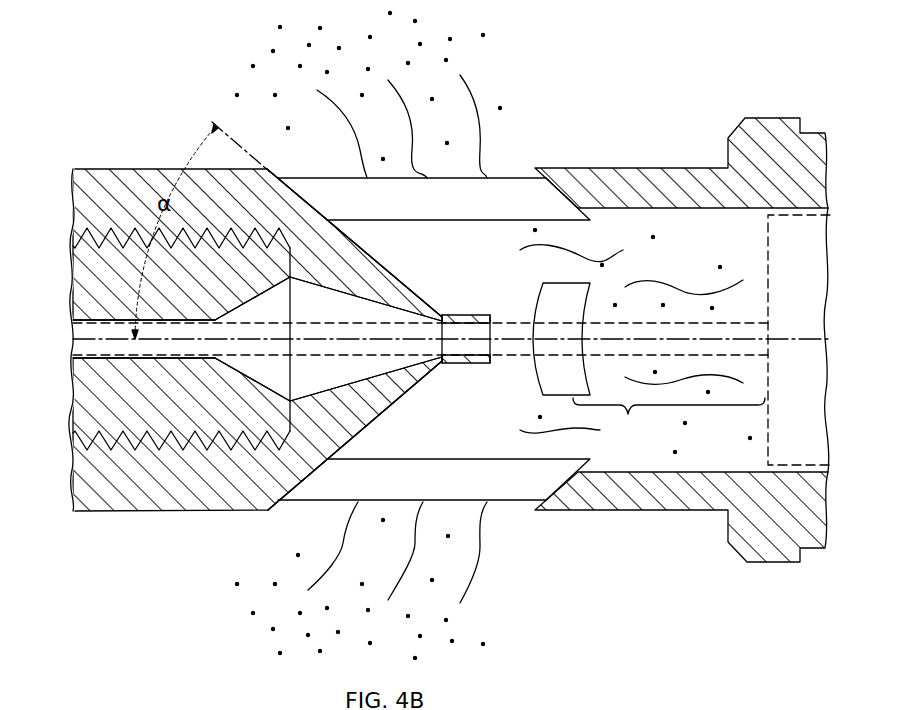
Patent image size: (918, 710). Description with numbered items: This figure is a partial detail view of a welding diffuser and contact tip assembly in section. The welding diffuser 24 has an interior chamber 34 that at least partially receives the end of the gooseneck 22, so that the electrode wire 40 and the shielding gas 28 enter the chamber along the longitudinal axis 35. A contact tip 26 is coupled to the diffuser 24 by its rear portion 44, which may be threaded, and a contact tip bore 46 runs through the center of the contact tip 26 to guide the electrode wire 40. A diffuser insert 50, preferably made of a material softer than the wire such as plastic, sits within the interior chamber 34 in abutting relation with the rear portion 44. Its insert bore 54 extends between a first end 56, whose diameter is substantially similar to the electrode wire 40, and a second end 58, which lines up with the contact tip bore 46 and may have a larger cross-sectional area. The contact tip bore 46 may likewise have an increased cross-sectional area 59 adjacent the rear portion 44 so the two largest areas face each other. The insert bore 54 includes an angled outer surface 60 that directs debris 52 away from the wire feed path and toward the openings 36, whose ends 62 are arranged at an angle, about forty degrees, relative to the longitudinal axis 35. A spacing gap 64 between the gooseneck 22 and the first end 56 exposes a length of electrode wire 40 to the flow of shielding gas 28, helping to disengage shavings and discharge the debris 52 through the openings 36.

The gooseneck 22 is at (772, 421).
The welding diffuser 24 is at (641, 174).
The contact tip 26 is at (103, 406).
The shielding gas 28 is at (434, 341).
The interior chamber 34 is at (717, 249).
The longitudinal axis 35 is at (178, 338).
The openings 36 is at (434, 343).
The electrode wire 40 is at (749, 328).
The rear portion 44 is at (181, 387).
The contact tip bore 46 is at (220, 360).
The diffuser insert 50 is at (343, 438).
The debris 52 is at (450, 335).
The insert bore 54 is at (379, 354).
The first end 56 is at (505, 311).
The second end 58 is at (292, 378).
The increased cross-sectional area 59 is at (289, 299).
The angled outer surface 60 is at (364, 339).
The ends 62 is at (354, 214).
The spacing gap 64 is at (649, 364).